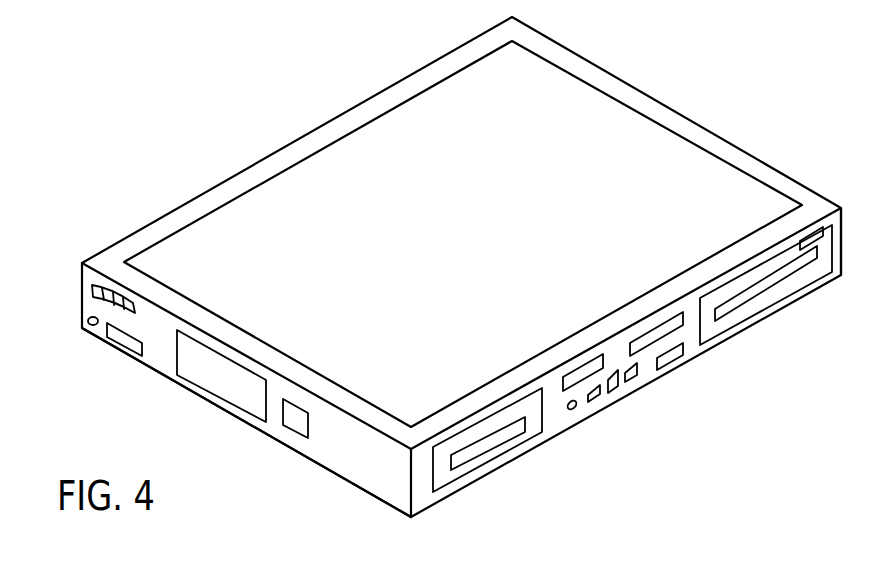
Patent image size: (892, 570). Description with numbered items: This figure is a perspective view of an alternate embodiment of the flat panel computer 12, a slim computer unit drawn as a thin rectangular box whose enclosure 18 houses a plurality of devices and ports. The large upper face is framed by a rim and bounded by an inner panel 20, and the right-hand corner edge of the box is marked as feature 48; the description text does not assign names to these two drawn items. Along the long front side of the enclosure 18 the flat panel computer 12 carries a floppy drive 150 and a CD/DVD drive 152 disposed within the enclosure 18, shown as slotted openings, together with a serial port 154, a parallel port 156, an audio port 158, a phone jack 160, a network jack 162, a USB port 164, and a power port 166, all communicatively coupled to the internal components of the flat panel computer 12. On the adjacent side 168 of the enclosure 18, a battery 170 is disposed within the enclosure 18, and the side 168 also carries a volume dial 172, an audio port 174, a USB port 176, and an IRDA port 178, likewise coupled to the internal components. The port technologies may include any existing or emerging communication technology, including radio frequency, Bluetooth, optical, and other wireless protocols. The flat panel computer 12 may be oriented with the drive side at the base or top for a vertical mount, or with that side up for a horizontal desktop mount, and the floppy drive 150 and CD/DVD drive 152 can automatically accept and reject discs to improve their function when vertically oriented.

The flat panel computer 12 is at (359, 40).
The enclosure 18 is at (285, 143).
The display / top panel 20 is at (560, 88).
The housing side edge 48 is at (841, 230).
The floppy drive 150 is at (466, 460).
The CD/DVD drive 152 is at (785, 280).
The serial port 154 is at (585, 365).
The parallel port 156 is at (655, 323).
The audio port 158 is at (569, 410).
The phone jack 160 is at (593, 403).
The network jack 162 is at (612, 394).
The USB port 164 is at (632, 382).
The power port 166 is at (668, 368).
The side 168 is at (377, 483).
The battery 170 is at (242, 403).
The volume dial 172 is at (90, 285).
The audio port 174 is at (87, 322).
The USB port 176 is at (118, 343).
The IRDA port 178 is at (296, 428).